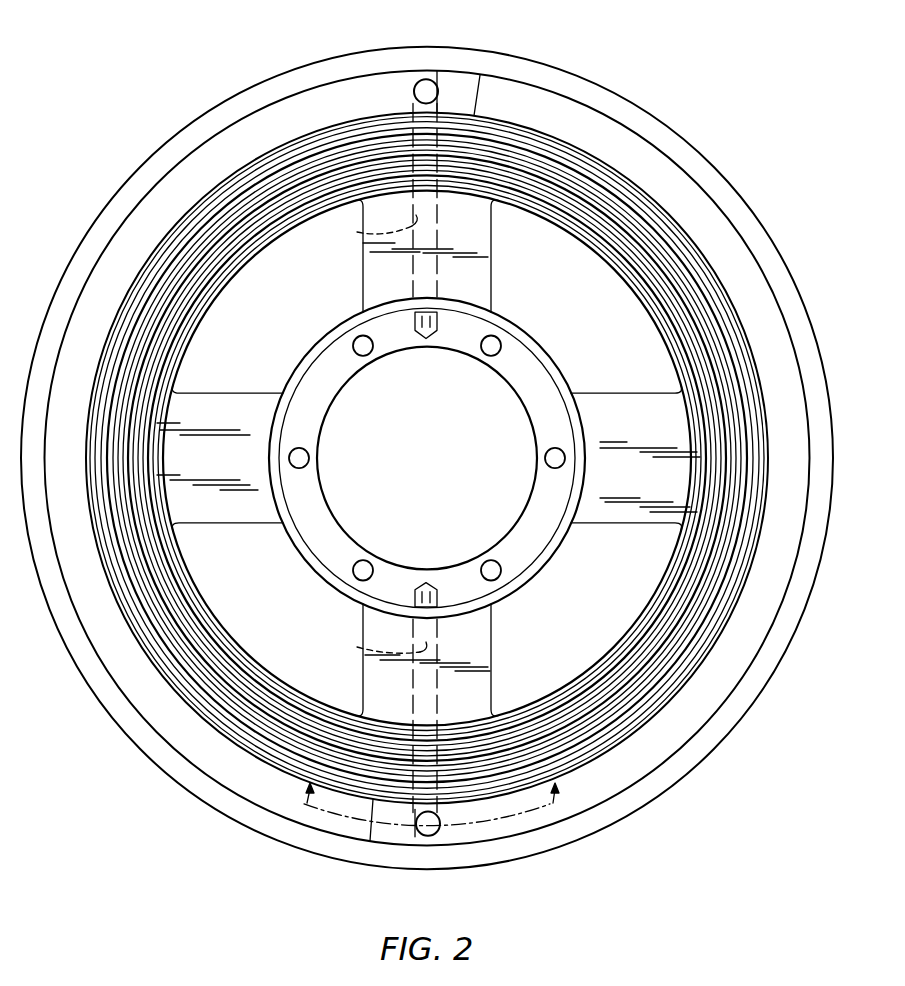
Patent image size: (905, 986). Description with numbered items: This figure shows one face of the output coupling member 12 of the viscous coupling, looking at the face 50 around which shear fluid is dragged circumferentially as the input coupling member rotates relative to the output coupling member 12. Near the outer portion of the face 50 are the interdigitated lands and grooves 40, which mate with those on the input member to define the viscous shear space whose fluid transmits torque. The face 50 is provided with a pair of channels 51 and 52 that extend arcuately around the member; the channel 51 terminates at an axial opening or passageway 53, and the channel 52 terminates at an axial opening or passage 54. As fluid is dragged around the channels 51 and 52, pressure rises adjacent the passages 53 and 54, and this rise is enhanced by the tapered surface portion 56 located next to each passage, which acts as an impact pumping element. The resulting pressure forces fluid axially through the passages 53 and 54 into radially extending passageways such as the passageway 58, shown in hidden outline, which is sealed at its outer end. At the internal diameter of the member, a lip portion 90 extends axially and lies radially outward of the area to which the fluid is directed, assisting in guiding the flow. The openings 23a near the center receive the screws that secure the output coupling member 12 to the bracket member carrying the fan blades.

The output coupling member 12 is at (690, 135).
The interdigitated lands and grooves 40 is at (708, 243).
The face 50 is at (158, 157).
The channel 51 is at (270, 112).
The channel 52 is at (689, 795).
The axial opening or passageway 53 is at (428, 82).
The axial opening or passage 54 is at (426, 836).
The tapered surface portion 56 is at (387, 88).
The radially extending passageway 58 is at (375, 648).
The lip portion 90 is at (535, 572).
The openings 23a is at (360, 358).